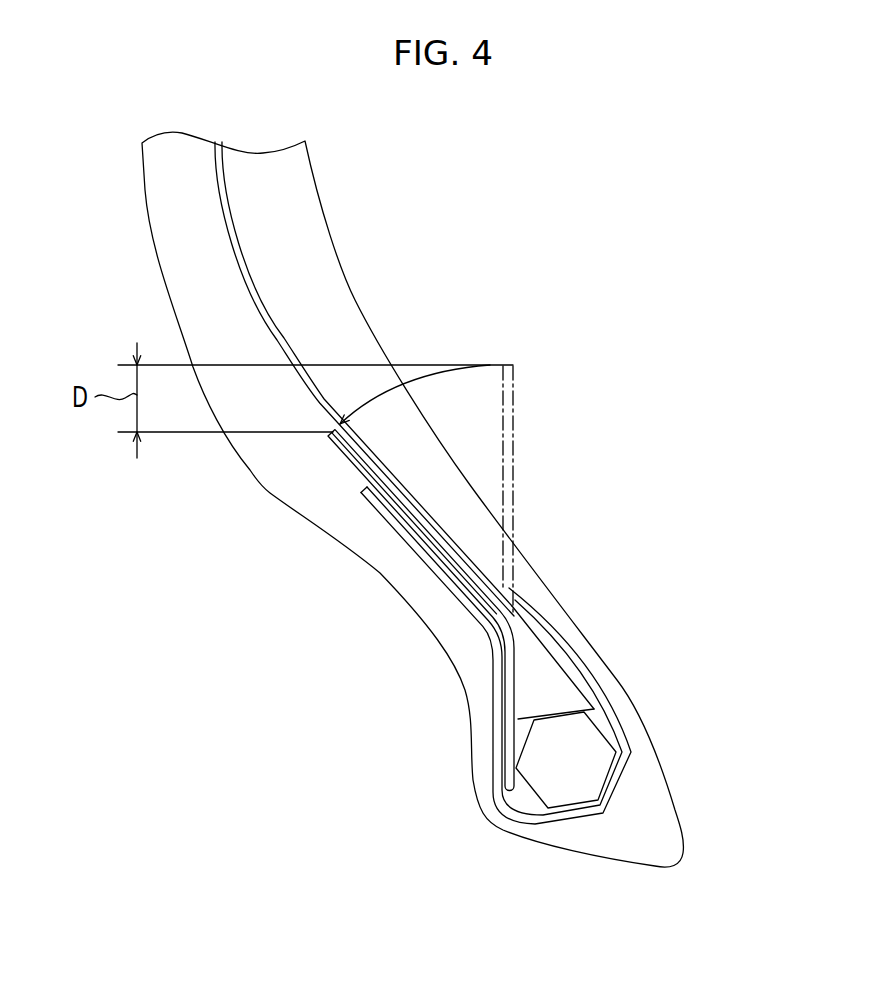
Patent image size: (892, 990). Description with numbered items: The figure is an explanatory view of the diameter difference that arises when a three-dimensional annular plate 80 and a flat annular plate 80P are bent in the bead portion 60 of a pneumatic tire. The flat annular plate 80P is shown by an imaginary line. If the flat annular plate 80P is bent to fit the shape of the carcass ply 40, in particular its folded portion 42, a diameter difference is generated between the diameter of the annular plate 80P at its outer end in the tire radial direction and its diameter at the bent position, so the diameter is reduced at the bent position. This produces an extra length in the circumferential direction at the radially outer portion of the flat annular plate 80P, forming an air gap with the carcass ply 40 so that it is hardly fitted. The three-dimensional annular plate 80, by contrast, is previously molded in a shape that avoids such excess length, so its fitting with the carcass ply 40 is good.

The carcass ply 40 is at (288, 345).
The folded portion 42 is at (413, 535).
The bead portion 60 is at (722, 610).
The annular plate 80 is at (352, 455).
The flat annular plate 80P is at (513, 450).